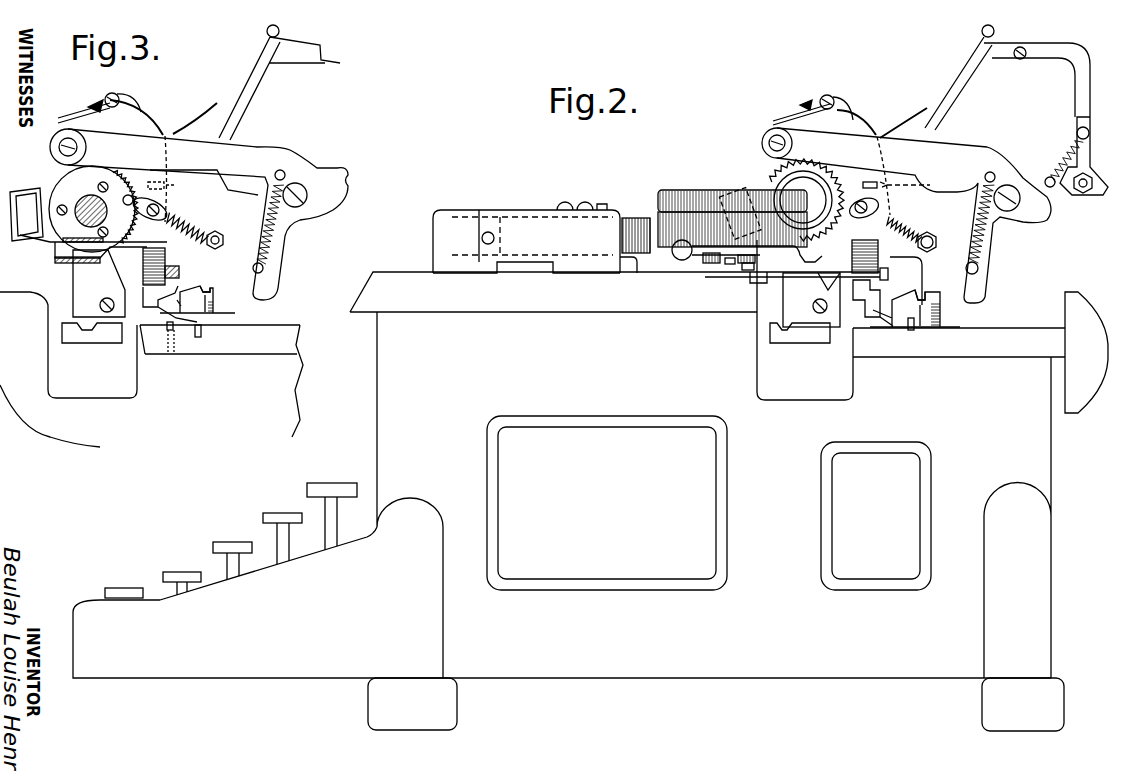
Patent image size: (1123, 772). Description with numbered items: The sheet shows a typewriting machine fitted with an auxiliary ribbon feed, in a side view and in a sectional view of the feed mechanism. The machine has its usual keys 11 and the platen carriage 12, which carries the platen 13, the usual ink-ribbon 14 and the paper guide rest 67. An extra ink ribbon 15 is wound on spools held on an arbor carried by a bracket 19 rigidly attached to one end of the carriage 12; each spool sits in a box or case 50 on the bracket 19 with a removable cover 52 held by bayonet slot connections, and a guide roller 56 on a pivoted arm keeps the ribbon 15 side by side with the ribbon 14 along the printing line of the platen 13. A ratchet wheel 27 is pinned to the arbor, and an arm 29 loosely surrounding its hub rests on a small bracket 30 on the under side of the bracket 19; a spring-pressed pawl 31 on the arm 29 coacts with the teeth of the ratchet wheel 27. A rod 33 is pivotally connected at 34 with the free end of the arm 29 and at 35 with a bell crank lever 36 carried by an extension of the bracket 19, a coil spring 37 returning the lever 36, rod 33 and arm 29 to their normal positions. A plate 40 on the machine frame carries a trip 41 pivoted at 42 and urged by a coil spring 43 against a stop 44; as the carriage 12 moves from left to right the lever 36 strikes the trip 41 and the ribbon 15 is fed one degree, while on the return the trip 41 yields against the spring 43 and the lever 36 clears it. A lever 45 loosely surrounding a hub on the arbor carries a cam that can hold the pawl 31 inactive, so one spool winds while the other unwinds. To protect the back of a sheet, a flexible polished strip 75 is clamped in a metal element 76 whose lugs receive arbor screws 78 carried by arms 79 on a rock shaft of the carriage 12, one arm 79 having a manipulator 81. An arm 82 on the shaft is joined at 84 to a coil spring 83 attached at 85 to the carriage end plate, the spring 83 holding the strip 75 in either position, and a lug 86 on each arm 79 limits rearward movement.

In FIG. 2, the keys 11 is at (235, 540).
In FIG. 2, the platen carriage 12 is at (993, 257).
In FIG. 3, the platen carriage 12 is at (279, 256).
In FIG. 3, the platen 13 is at (55, 182).
In FIG. 2, the ink-ribbon 14 is at (627, 217).
In FIG. 3, the auxiliary ink ribbon 15 is at (80, 205).
In FIG. 2, the bracket 19 is at (727, 250).
In FIG. 3, the bracket 19 is at (58, 264).
In FIG. 2, the ratchet wheel 27 is at (706, 264).
In FIG. 2, the arm 29 is at (748, 266).
In FIG. 2, the small bracket 30 is at (728, 266).
In FIG. 2, the pawl 31 is at (745, 272).
In FIG. 2, the rod 33 is at (796, 278).
In FIG. 3, the rod 33 is at (145, 268).
In FIG. 2, the pivotal connection 34 is at (759, 283).
In FIG. 3, the pivotal connection 35 is at (173, 265).
In FIG. 2, the bell crank lever 36 is at (881, 297).
In FIG. 3, the bell crank lever 36 is at (179, 288).
In FIG. 2, the coil spring 37 is at (879, 251).
In FIG. 3, the coil spring 37 is at (141, 254).
In FIG. 2, the plate 40 is at (975, 328).
In FIG. 3, the plate 40 is at (265, 326).
In FIG. 2, the trip 41 is at (900, 310).
In FIG. 3, the trip 41 is at (196, 300).
In FIG. 2, the pivot 42 is at (926, 298).
In FIG. 3, the pivot 42 is at (222, 300).
In FIG. 2, the coil spring 43 is at (921, 313).
In FIG. 3, the coil spring 43 is at (213, 312).
In FIG. 2, the stop 44 is at (910, 324).
In FIG. 3, the stop 44 is at (197, 334).
In FIG. 2, the lever 45 is at (672, 256).
In FIG. 2, the case 50 is at (700, 215).
In FIG. 2, the cover 52 is at (682, 190).
In FIG. 2, the guide roller 56 is at (743, 190).
In FIG. 3, the guide roller 56 is at (28, 243).
In FIG. 2, the paper guide rest 67 is at (966, 62).
In FIG. 3, the paper guide rest 67 is at (252, 65).
In FIG. 2, the strip 75 is at (774, 120).
In FIG. 3, the strip 75 is at (63, 118).
In FIG. 2, the metal element 76 is at (807, 104).
In FIG. 3, the metal element 76 is at (93, 106).
In FIG. 2, the arbor screws 78 is at (830, 95).
In FIG. 3, the arbor screws 78 is at (119, 94).
In FIG. 2, the arms 79 is at (857, 120).
In FIG. 3, the arms 79 is at (152, 121).
In FIG. 2, the manipulator 81 is at (905, 124).
In FIG. 3, the manipulator 81 is at (195, 112).
In FIG. 2, the arm 82 is at (853, 198).
In FIG. 3, the arm 82 is at (170, 204).
In FIG. 2, the coil spring 83 is at (906, 228).
In FIG. 3, the coil spring 83 is at (199, 227).
In FIG. 3, the spring connection 84 is at (130, 195).
In FIG. 2, the spring attachment 85 is at (934, 240).
In FIG. 3, the spring attachment 85 is at (223, 237).
In FIG. 2, the lug 86 is at (907, 185).